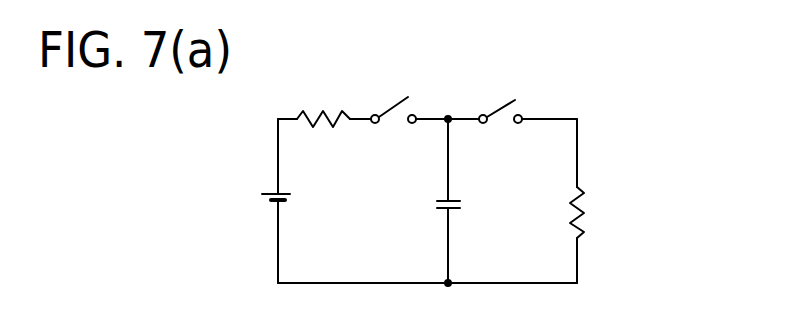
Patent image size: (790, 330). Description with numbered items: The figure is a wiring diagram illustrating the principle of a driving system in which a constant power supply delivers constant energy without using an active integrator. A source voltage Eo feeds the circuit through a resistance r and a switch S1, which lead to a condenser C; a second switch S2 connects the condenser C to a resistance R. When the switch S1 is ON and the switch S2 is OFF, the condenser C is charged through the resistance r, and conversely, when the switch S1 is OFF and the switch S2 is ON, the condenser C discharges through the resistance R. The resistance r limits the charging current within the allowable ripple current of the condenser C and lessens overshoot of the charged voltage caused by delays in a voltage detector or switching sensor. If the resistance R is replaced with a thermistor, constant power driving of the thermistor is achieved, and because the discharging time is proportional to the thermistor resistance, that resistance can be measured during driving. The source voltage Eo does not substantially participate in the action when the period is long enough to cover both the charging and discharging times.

The resistance r is at (328, 112).
The switch S1 is at (397, 104).
The switch S2 is at (502, 107).
The source voltage Eo is at (254, 149).
The condenser C is at (435, 208).
The resistance R is at (585, 206).